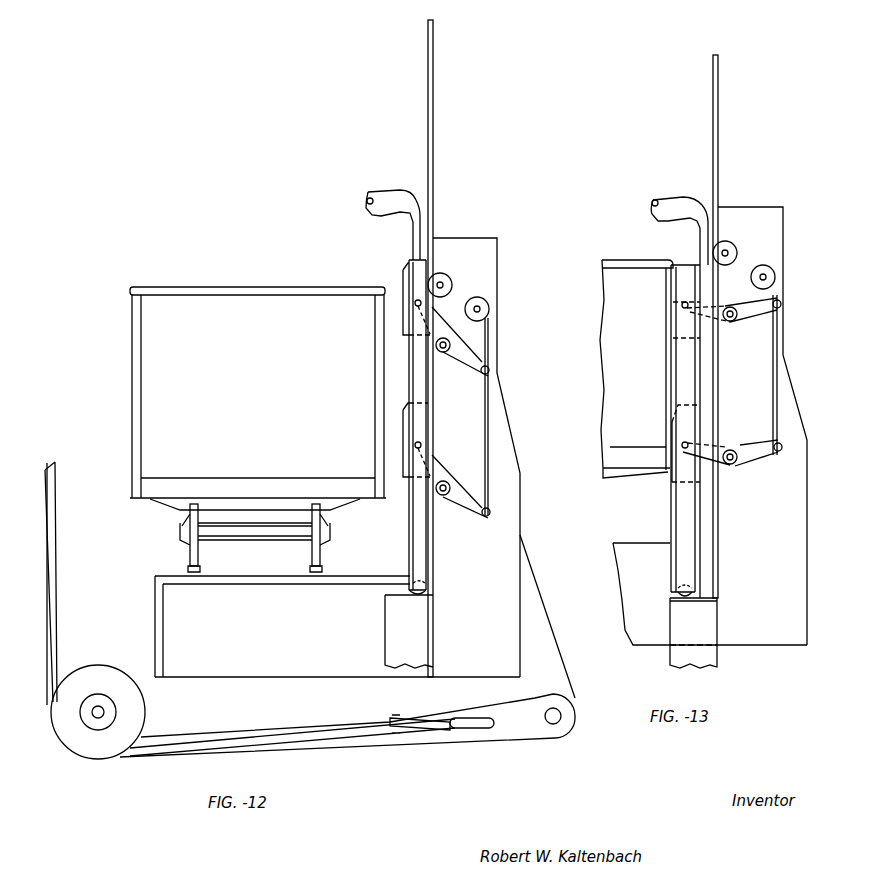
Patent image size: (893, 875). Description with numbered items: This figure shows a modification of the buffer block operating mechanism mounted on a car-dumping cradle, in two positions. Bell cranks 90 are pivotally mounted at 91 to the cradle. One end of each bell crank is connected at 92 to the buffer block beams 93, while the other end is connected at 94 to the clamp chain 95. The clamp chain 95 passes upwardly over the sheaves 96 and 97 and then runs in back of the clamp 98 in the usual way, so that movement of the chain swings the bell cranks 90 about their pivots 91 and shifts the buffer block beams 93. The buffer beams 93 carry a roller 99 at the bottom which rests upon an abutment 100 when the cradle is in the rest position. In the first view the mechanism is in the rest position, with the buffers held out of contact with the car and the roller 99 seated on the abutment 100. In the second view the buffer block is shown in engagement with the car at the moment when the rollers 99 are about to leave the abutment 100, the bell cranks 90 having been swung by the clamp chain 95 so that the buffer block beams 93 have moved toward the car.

In FIG. 12, the bell cranks 90 is at (468, 362).
In FIG. 13, the bell cranks 90 is at (760, 316).
In FIG. 12, the pivot 91 is at (465, 352).
In FIG. 13, the pivot 91 is at (733, 310).
In FIG. 12, the connection to buffer block beams 92 is at (415, 305).
In FIG. 13, the connection to buffer block beams 92 is at (681, 308).
In FIG. 12, the buffer block beams 93 is at (412, 281).
In FIG. 13, the buffer block beams 93 is at (674, 283).
In FIG. 12, the connection to clamp chain 94 is at (490, 370).
In FIG. 13, the connection to clamp chain 94 is at (782, 303).
In FIG. 12, the clamp chain 95 is at (433, 100).
In FIG. 13, the clamp chain 95 is at (718, 170).
In FIG. 12, the sheave 96 is at (466, 313).
In FIG. 13, the sheave 96 is at (750, 277).
In FIG. 12, the sheave 97 is at (447, 281).
In FIG. 13, the sheave 97 is at (750, 240).
In FIG. 12, the clamp 98 is at (400, 184).
In FIG. 13, the clamp 98 is at (690, 190).
In FIG. 12, the roller 99 is at (420, 580).
In FIG. 13, the roller 99 is at (684, 585).
In FIG. 12, the abutment 100 is at (388, 611).
In FIG. 13, the abutment 100 is at (672, 628).